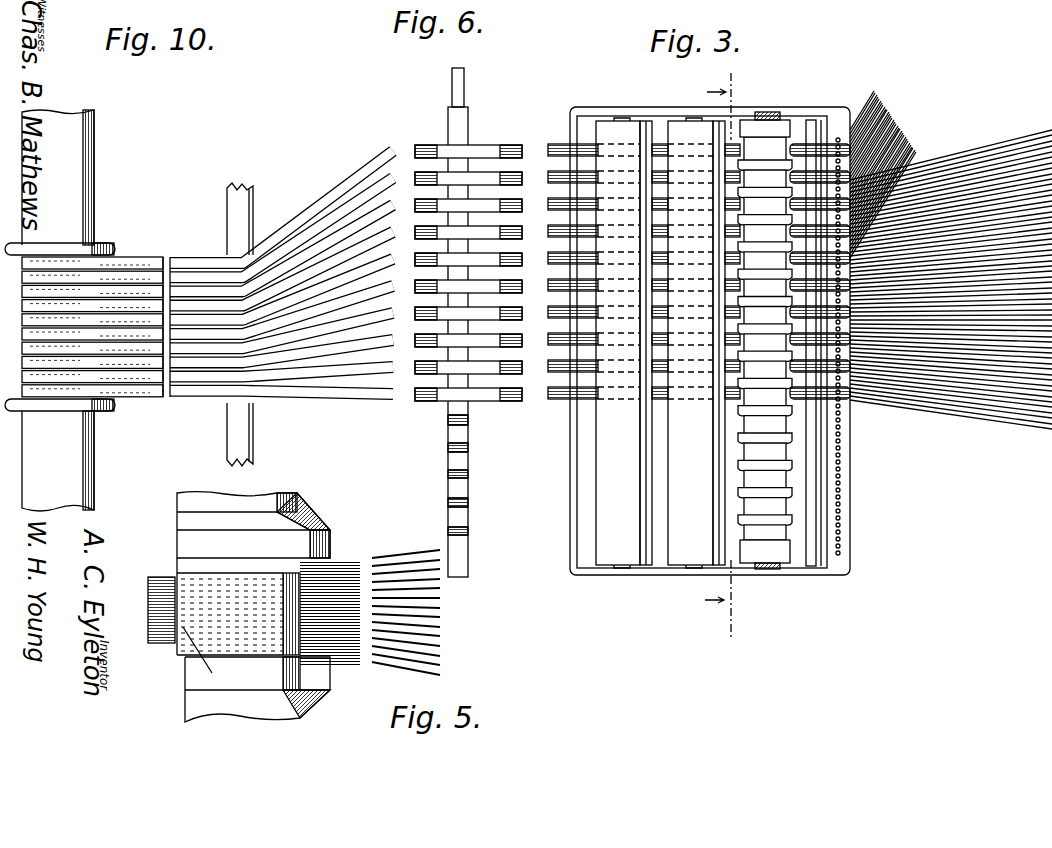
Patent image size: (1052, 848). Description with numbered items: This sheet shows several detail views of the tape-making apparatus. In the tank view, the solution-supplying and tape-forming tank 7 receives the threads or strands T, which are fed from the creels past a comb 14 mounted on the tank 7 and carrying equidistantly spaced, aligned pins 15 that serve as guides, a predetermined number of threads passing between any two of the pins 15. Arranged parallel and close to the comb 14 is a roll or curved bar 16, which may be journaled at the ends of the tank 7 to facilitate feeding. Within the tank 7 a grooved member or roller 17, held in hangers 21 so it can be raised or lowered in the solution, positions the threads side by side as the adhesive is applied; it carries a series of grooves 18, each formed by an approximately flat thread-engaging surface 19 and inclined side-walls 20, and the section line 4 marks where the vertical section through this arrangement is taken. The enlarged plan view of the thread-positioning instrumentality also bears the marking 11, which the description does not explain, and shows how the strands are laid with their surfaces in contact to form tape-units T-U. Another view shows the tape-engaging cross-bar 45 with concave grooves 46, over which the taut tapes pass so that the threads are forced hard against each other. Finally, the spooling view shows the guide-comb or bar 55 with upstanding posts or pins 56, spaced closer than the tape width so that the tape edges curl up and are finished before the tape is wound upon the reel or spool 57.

In FIG. 3, the section line 4— 4 is at (718, 363).
In FIG. 3, the tank 7 is at (572, 549).
In FIG. 5, the fabric portion 11 is at (202, 591).
In FIG. 5, the comb 14 is at (424, 566).
In FIG. 3, the comb 14 is at (843, 496).
In FIG. 3, the pins 15 is at (841, 456).
In FIG. 3, the roll or curved bar 16 is at (822, 120).
In FIG. 5, the grooved member or roller 17 is at (178, 625).
In FIG. 3, the grooved member or roller 17 is at (765, 130).
In FIG. 3, the grooves 18 is at (792, 447).
In FIG. 5, the flat thread-engaging surface 19 is at (298, 510).
In FIG. 5, the inclined side-walls 20 is at (322, 562).
In FIG. 3, the hangers 21 is at (762, 114).
In FIG. 6, the cross-bar 45 is at (462, 566).
In FIG. 6, the grooves 46 is at (462, 531).
In FIG. 10, the guide-comb or bar 55 is at (246, 233).
In FIG. 10, the posts or pins 56 is at (232, 253).
In FIG. 10, the reel or spool 57 is at (113, 247).
In FIG. 5, the threads or strands T is at (385, 642).
In FIG. 3, the threads or strands T is at (898, 155).
In FIG. 10, the tape-units T-U is at (412, 380).
In FIG. 3, the tape-units T-U is at (730, 312).